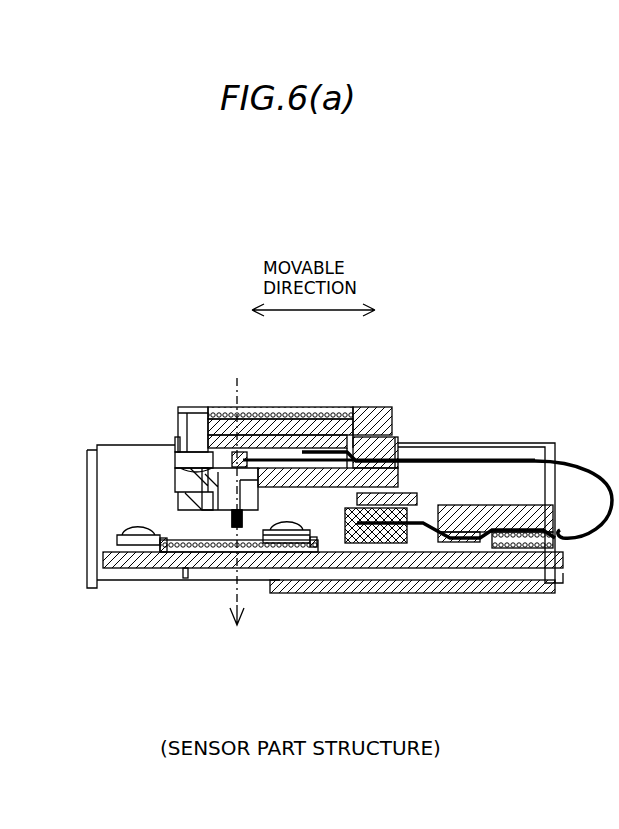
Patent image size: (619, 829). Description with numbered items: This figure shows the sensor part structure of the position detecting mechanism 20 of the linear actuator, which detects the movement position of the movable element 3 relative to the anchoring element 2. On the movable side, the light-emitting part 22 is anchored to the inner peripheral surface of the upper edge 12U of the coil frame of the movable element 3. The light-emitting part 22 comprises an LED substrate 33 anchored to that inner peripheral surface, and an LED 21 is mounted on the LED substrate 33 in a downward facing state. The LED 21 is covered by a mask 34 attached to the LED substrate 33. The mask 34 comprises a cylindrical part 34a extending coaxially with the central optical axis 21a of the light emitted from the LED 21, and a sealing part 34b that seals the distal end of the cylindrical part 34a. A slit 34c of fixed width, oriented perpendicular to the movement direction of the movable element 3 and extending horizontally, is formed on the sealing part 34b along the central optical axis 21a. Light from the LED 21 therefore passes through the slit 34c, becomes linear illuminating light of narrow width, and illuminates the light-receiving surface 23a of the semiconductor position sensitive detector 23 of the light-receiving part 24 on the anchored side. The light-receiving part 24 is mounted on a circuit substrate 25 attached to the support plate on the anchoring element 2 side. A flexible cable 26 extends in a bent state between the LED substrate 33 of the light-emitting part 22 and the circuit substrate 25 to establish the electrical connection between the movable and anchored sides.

The anchoring element 2 is at (518, 437).
The movable element 3 is at (379, 402).
The upper edge 12U is at (333, 427).
The position detecting mechanism 20 is at (150, 477).
The LED 21 is at (232, 460).
The central optical axis 21a is at (248, 492).
The light-emitting part 22 is at (172, 441).
The semiconductor position sensitive detector 23 is at (160, 541).
The light-receiving surface 23a is at (262, 527).
The light-receiving part 24 is at (180, 558).
The circuit substrate 25 is at (510, 553).
The flexible cable 26 is at (535, 462).
The LED substrate 33 is at (367, 447).
The mask 34 is at (333, 503).
The cylindrical part 34a is at (303, 488).
The sealing part 34b is at (243, 527).
The slit 34c is at (236, 527).